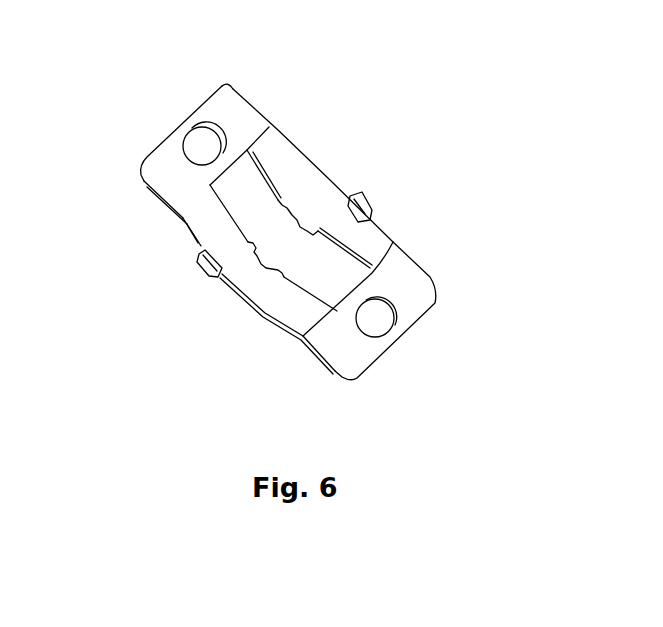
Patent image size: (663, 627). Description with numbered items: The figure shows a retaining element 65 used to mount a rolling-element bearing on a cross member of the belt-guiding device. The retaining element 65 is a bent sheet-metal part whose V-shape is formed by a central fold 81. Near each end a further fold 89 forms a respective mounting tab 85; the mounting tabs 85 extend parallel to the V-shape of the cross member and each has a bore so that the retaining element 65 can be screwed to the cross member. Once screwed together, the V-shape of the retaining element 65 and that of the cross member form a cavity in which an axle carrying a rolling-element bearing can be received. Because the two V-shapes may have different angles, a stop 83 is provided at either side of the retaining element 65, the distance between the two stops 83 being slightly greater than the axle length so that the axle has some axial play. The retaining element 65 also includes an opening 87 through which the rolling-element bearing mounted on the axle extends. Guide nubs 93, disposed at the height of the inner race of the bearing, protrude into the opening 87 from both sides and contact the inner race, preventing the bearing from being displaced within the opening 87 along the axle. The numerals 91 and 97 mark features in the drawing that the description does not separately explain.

The retaining element 65 is at (114, 108).
The central fold 81 is at (312, 207).
The stop 83 is at (373, 198).
The mounting tab 85 is at (233, 112).
The opening 87 is at (337, 288).
The further fold 89 is at (250, 150).
The mounting hole 91 is at (198, 142).
The guide nub 93 is at (303, 210).
The mounting hole 97 is at (378, 322).